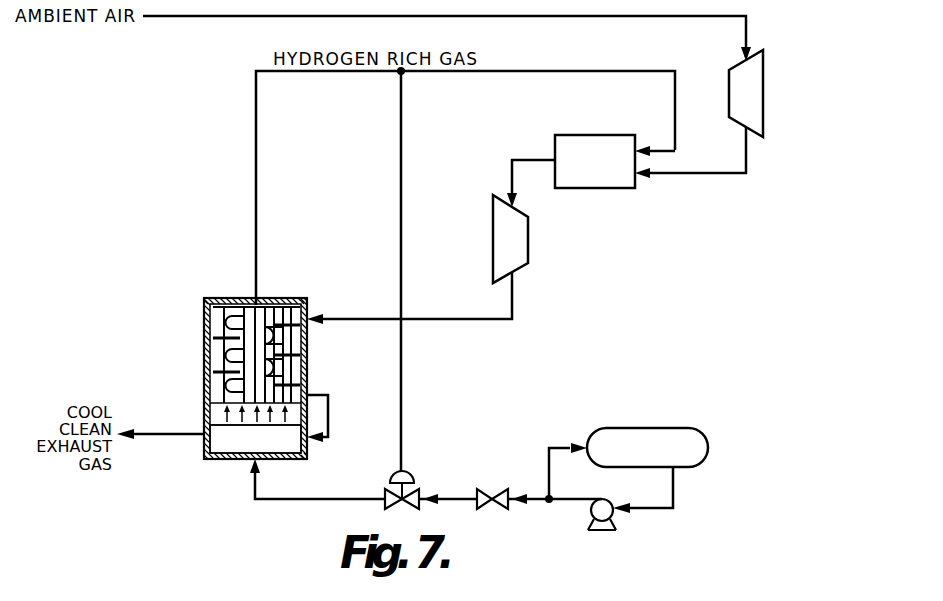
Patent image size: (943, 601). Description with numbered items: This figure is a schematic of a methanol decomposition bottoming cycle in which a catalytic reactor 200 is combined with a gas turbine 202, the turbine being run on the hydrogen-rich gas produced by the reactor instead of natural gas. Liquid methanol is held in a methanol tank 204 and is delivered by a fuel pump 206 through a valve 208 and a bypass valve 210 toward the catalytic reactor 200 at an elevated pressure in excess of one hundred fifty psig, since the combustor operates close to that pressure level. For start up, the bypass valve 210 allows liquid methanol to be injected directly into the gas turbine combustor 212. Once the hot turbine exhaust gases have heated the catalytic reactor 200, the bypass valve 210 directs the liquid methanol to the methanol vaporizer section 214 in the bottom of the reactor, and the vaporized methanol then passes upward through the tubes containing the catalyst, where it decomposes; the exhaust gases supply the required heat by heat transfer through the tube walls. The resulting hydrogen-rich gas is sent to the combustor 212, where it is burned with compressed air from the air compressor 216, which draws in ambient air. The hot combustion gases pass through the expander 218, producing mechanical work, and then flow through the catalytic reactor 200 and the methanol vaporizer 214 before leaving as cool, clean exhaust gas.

The catalytic reactor 200 is at (214, 284).
The gas turbine 202 is at (670, 185).
The methanol tank 204 is at (645, 428).
The fuel pump 206 is at (614, 515).
The valve 208 is at (507, 491).
The bypass valve 210 is at (390, 492).
The gas turbine combustor 212 is at (610, 135).
The methanol vaporizer section 214 is at (227, 440).
The air compressor 216 is at (727, 80).
The expander 218 is at (528, 232).